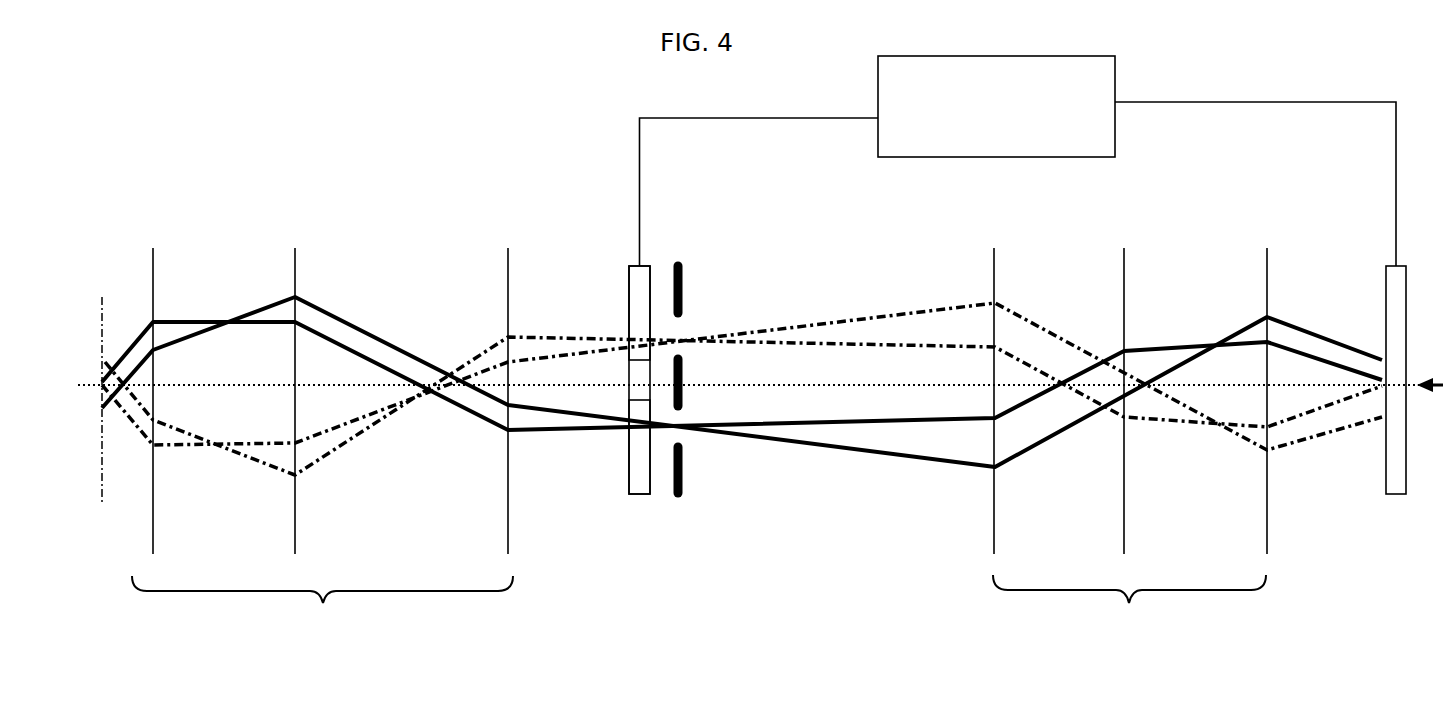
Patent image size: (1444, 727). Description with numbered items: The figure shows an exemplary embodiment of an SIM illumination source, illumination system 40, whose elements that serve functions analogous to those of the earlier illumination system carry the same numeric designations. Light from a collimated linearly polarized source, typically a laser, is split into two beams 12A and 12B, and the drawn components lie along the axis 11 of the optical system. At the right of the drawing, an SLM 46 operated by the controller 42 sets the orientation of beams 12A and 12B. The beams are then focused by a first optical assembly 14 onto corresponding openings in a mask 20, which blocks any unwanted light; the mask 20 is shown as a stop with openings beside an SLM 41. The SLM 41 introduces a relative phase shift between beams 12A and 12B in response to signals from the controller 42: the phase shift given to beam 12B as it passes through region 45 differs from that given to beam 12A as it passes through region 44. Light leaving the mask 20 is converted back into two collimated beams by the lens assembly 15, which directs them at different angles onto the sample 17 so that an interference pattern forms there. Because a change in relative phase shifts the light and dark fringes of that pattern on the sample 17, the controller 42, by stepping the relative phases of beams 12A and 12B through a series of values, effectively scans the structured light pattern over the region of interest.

The illumination system 40 is at (218, 150).
The axis 11 is at (905, 385).
The sample 17 is at (100, 382).
The lens assembly 15 is at (322, 448).
The first optical assembly 14 is at (1130, 448).
The beam 12A is at (1317, 358).
The beam 12B is at (1342, 420).
The SLM 41 is at (637, 494).
The region 44 is at (610, 438).
The region 45 is at (598, 317).
The mask 20 is at (683, 283).
The controller 42 is at (1013, 144).
The SLM 46 is at (1405, 273).